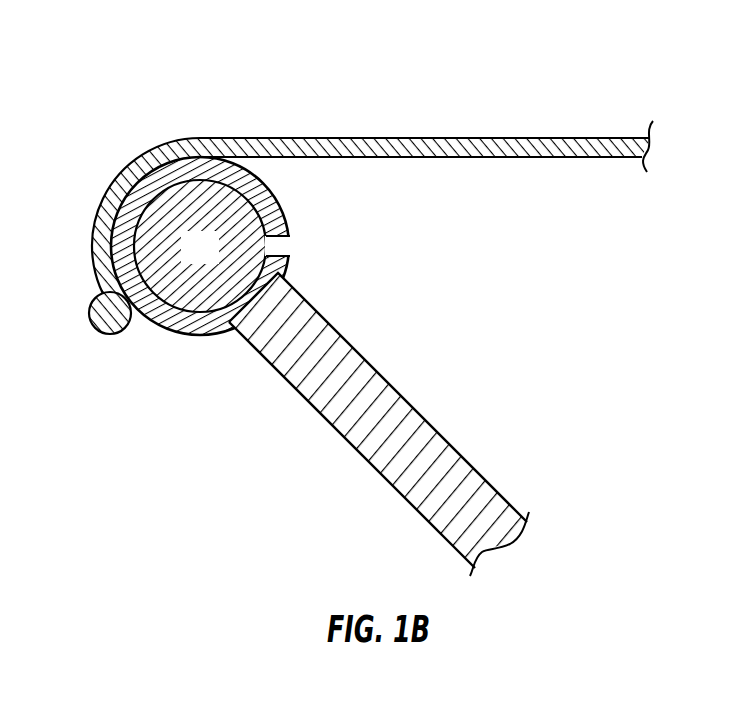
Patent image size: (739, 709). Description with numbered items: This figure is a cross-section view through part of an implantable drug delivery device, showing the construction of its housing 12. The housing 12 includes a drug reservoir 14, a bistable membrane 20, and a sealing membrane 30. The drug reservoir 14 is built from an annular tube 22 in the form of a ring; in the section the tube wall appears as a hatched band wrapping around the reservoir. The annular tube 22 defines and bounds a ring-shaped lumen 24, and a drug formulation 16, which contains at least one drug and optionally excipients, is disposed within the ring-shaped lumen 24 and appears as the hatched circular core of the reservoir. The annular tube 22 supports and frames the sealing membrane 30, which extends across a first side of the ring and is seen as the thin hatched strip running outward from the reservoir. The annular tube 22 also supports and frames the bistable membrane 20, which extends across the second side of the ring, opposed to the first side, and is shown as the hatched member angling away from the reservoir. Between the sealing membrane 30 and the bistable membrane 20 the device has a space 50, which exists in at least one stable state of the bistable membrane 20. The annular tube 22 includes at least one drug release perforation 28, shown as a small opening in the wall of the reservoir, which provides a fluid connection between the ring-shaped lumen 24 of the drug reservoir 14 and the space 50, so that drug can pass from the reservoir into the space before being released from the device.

The housing 12 is at (371, 197).
The drug reservoir 14 is at (183, 341).
The drug formulation 16 is at (216, 262).
The bistable membrane 20 is at (371, 351).
The annular tube 22 is at (140, 197).
The ring-shaped lumen 24 is at (157, 250).
The drug release perforation 28 is at (297, 247).
The sealing membrane 30 is at (356, 137).
The space 50 is at (512, 294).